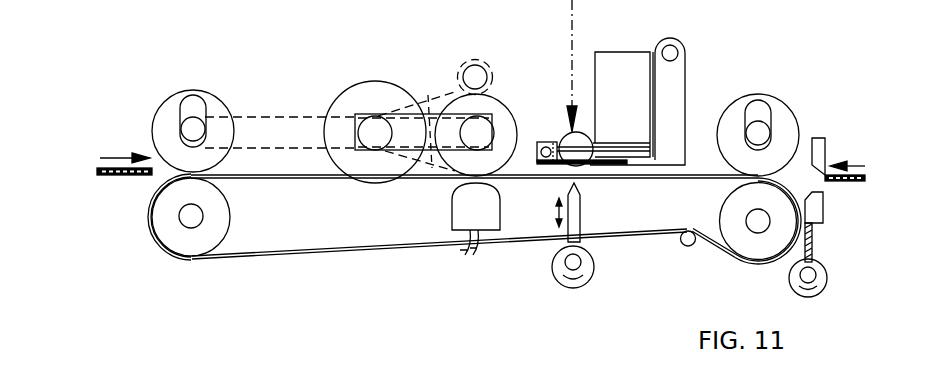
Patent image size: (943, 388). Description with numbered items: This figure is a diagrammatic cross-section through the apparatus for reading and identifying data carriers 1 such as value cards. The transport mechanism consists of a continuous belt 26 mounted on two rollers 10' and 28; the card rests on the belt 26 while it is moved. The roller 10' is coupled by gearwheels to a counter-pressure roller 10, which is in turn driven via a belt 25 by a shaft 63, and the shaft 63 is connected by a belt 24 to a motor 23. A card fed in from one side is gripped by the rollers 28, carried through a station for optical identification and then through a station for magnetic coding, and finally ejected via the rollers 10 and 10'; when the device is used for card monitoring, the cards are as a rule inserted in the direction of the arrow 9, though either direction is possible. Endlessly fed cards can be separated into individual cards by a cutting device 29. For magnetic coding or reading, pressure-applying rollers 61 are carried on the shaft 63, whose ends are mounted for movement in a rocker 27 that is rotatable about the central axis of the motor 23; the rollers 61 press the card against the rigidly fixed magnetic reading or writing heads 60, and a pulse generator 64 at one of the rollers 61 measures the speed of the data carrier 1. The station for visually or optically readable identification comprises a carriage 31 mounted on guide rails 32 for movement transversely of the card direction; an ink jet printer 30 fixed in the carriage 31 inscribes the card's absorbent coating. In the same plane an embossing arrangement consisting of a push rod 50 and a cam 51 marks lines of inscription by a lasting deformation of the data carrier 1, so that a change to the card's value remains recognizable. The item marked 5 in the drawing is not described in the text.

The data carrier 1 is at (118, 176).
The outlet stack 5 is at (855, 165).
The arrow 9 is at (118, 158).
The counter-pressure roller 10 is at (193, 110).
The roller 10' is at (191, 243).
The motor 23 is at (362, 95).
The belt 24 is at (428, 102).
The belt 25 is at (281, 117).
The continuous belt 26 is at (289, 179).
The rocker 27 is at (432, 167).
The rollers 28 is at (783, 123).
The cutting device 29 is at (813, 253).
The ink jet printer 30 is at (623, 65).
The carriage 31 is at (675, 80).
The guide rails 32 is at (672, 53).
The push rod 50 is at (578, 242).
The cam 51 is at (590, 268).
The magnetic reading or writing heads 60 is at (485, 220).
The pressure-applying rollers 61 is at (507, 135).
The shaft 63 is at (478, 127).
The pulse generator 64 is at (474, 72).